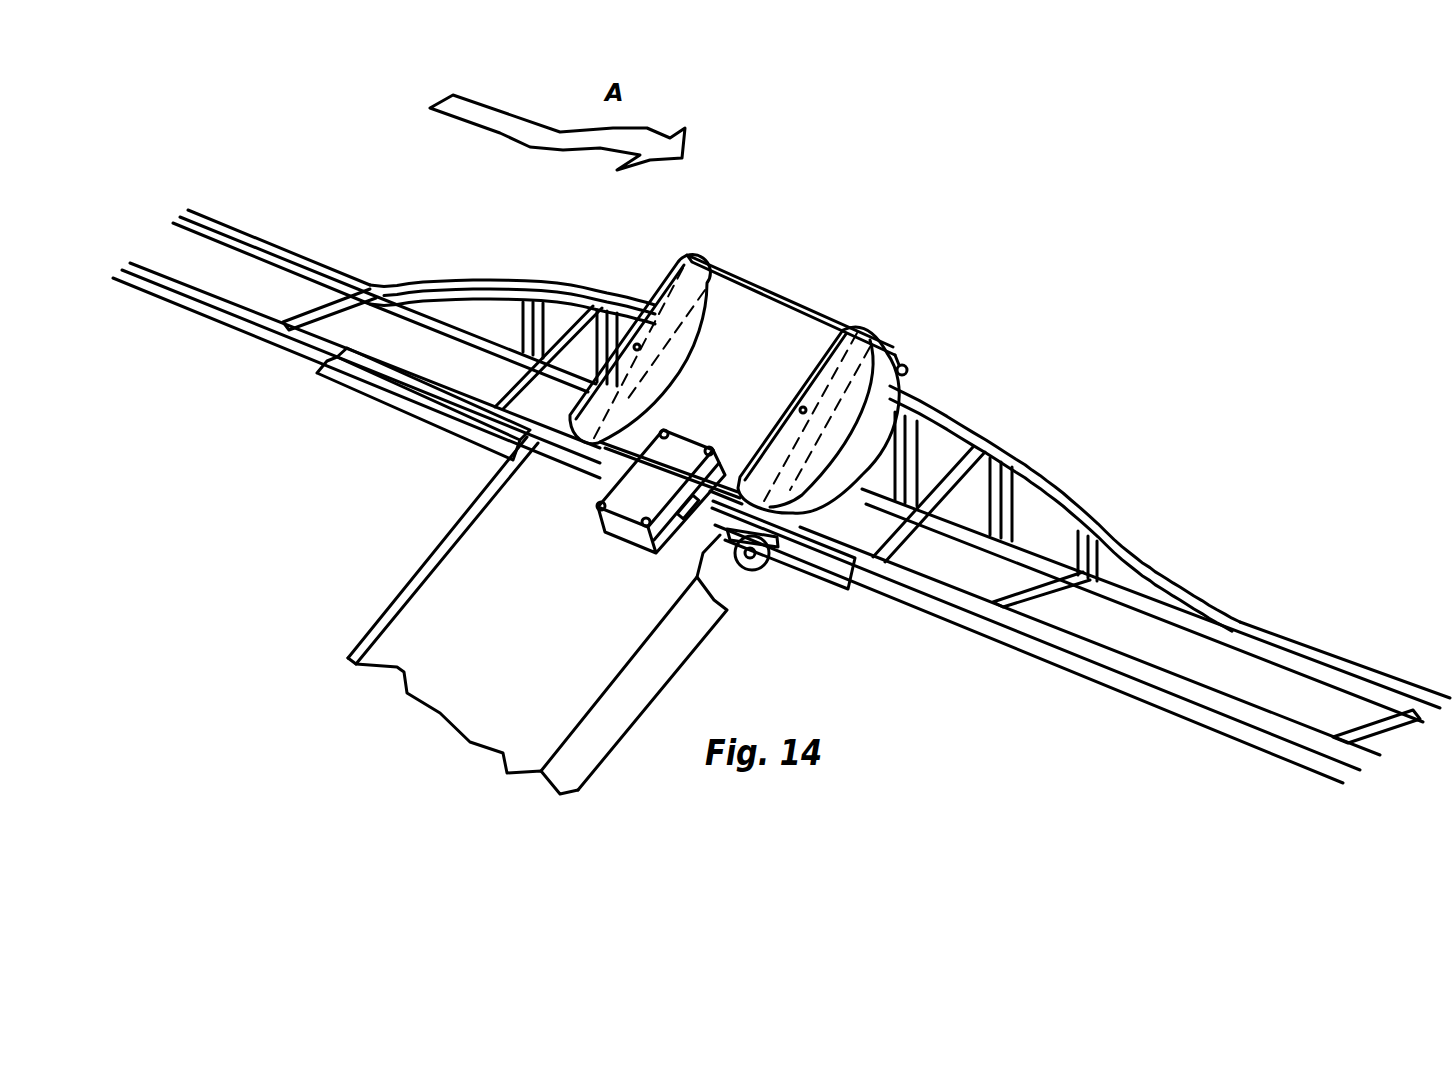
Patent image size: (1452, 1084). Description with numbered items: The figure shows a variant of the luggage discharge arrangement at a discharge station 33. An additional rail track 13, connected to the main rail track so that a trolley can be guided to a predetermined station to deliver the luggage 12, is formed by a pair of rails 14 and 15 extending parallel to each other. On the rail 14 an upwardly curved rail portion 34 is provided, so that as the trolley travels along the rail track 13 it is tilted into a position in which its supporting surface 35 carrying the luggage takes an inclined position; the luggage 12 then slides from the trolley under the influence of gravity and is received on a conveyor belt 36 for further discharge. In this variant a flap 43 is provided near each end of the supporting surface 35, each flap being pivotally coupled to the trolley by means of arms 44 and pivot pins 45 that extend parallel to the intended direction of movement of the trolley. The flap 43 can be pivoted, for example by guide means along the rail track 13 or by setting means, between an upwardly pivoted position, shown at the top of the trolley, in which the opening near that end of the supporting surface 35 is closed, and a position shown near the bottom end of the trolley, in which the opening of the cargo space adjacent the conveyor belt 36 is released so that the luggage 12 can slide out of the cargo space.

The luggage 12 is at (620, 517).
The additional rail track 13 is at (393, 257).
The rail 14 is at (229, 227).
The rail 15 is at (210, 313).
The discharge station 33 is at (343, 528).
The upwardly curved rail portion 34 is at (1073, 509).
The supporting surface 35 is at (750, 377).
The conveyor belt 36 is at (685, 637).
The flap 43 is at (730, 272).
The arms 44 is at (873, 327).
The pivot pins 45 is at (905, 348).